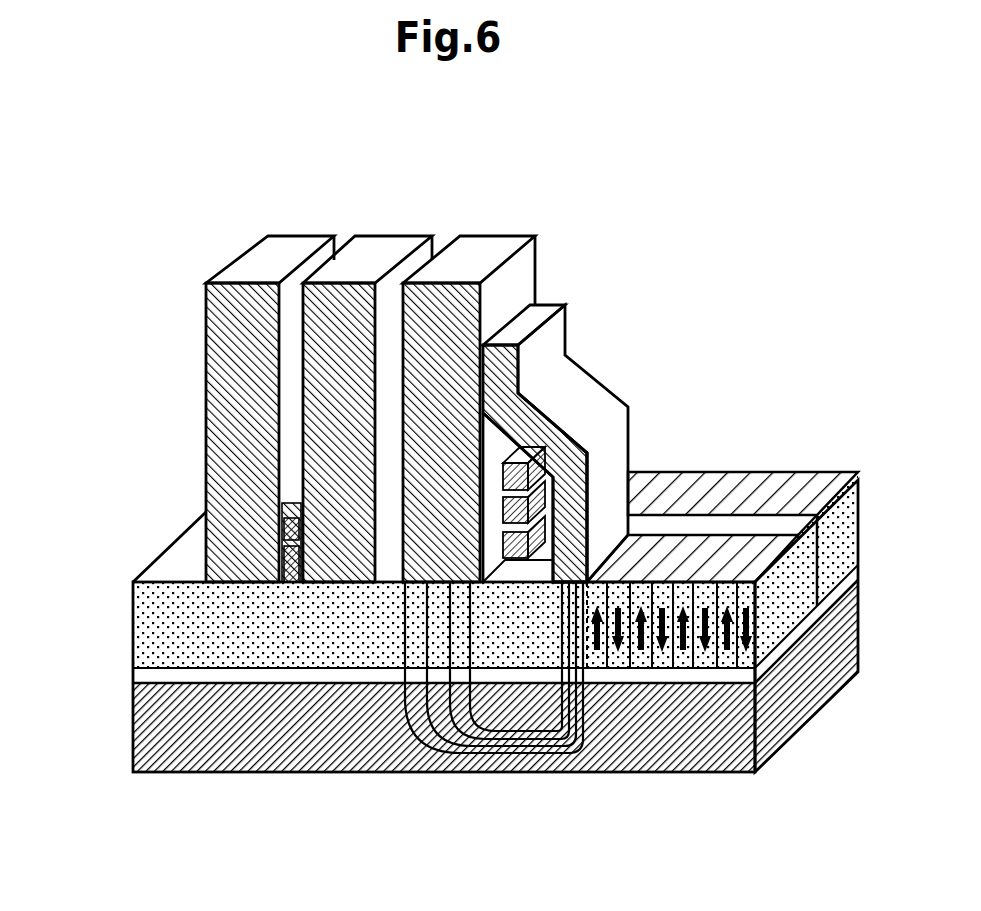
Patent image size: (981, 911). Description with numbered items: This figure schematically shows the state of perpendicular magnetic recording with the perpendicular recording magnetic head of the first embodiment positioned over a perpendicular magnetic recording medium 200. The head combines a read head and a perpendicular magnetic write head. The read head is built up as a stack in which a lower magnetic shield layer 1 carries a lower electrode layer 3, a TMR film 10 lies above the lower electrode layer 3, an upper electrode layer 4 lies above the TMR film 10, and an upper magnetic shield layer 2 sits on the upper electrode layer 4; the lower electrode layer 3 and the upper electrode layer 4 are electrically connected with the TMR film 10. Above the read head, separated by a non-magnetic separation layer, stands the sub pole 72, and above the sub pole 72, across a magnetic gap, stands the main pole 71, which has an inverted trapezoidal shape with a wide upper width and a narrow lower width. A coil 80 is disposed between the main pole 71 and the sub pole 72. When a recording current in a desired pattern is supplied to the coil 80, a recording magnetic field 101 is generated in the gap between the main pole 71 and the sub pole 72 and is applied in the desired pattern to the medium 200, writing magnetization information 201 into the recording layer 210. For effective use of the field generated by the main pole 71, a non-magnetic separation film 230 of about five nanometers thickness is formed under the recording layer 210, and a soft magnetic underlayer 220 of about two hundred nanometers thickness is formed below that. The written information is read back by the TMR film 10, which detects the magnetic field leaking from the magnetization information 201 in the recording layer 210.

The lower magnetic shield layer 1 is at (290, 247).
The upper magnetic shield layer 2 is at (376, 250).
The lower electrode layer 3 is at (288, 562).
The upper electrode layer 4 is at (288, 556).
The TMR film 10 is at (194, 487).
The sub pole 72 is at (487, 250).
The main pole 71 is at (552, 342).
The coil 80 is at (568, 445).
The perpendicular magnetic recording medium 200 is at (442, 686).
The recording layer 210 is at (185, 640).
The non-magnetic separation film 230 is at (270, 675).
The soft magnetic underlayer 220 is at (360, 700).
The magnetization information 201 is at (614, 672).
The recording magnetic field 101 is at (508, 772).